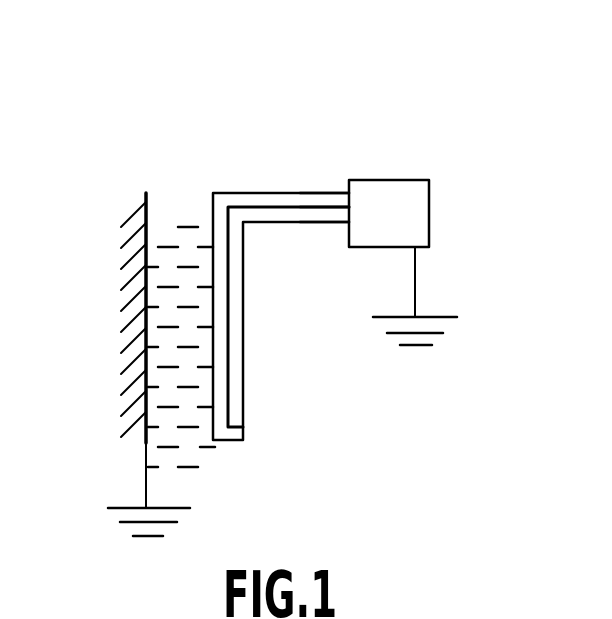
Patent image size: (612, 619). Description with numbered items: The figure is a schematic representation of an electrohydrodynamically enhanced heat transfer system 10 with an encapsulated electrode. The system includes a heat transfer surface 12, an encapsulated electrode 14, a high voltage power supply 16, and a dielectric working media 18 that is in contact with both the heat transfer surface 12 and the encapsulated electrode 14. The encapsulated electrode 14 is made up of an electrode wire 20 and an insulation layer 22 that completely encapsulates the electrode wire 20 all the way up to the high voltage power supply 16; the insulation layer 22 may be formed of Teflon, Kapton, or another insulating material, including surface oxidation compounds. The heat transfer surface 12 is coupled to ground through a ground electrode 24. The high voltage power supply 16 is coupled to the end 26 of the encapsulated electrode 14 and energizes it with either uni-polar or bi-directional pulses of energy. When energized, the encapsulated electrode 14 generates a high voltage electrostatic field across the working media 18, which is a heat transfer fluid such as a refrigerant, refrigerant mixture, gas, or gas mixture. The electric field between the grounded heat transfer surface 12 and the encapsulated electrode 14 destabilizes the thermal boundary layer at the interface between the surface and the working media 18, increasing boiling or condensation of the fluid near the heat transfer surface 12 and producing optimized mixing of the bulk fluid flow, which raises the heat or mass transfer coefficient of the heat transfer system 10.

The heat transfer system 10 is at (238, 97).
The heat transfer surface 12 is at (147, 228).
The encapsulated electrode 14 is at (266, 268).
The high voltage power supply 16 is at (421, 207).
The dielectric working media 18 is at (188, 450).
The electrode wire 20 is at (244, 422).
The insulation layer 22 is at (244, 377).
The ground electrode 24 is at (147, 484).
The end of the encapsulated electrode 26 is at (348, 202).